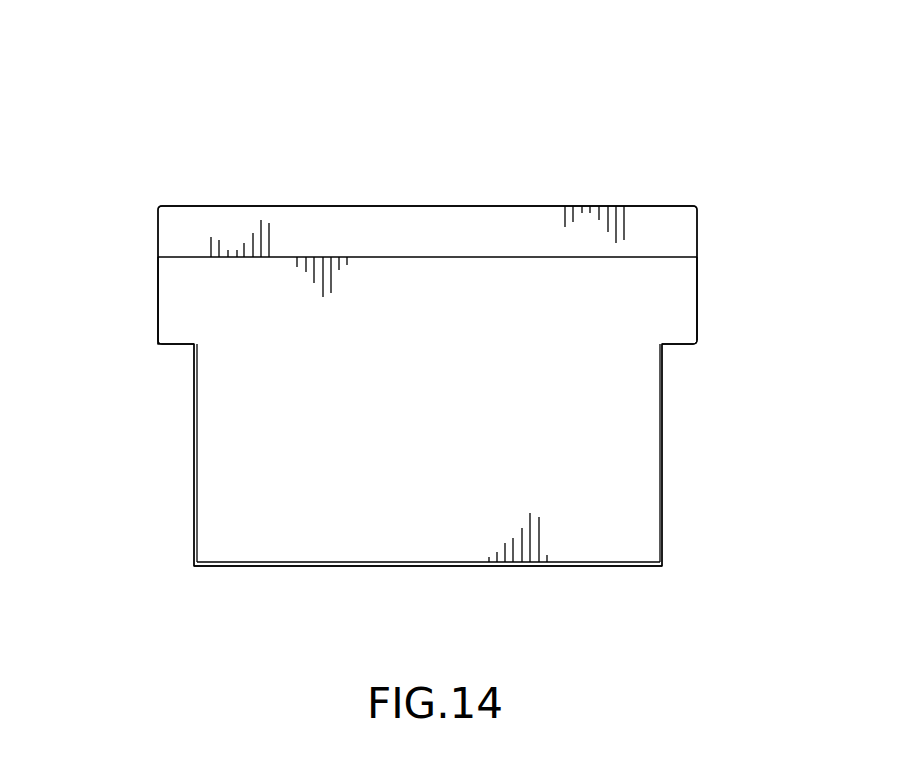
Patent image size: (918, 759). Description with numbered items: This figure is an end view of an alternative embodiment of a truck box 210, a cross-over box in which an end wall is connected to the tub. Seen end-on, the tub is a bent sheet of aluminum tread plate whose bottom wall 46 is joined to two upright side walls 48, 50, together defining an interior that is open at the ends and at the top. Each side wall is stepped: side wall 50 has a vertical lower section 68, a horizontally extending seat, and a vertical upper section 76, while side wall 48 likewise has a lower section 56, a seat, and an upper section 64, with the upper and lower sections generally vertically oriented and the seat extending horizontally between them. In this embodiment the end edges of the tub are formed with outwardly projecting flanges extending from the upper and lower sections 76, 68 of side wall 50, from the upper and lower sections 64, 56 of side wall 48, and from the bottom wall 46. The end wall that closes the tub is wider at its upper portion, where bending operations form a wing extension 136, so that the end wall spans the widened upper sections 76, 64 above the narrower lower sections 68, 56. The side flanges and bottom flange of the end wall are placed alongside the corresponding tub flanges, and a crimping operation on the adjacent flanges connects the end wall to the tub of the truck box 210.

The truck box 210 is at (705, 94).
The wing extension 136 is at (105, 180).
The upper section of side wall 50 76 is at (158, 305).
The upper section of side wall 48 64 is at (697, 315).
The side wall 50 is at (147, 435).
The lower section of side wall 50 68 is at (194, 508).
The side wall 48 is at (711, 436).
The lower section of side wall 48 56 is at (663, 530).
The bottom wall 46 is at (277, 566).